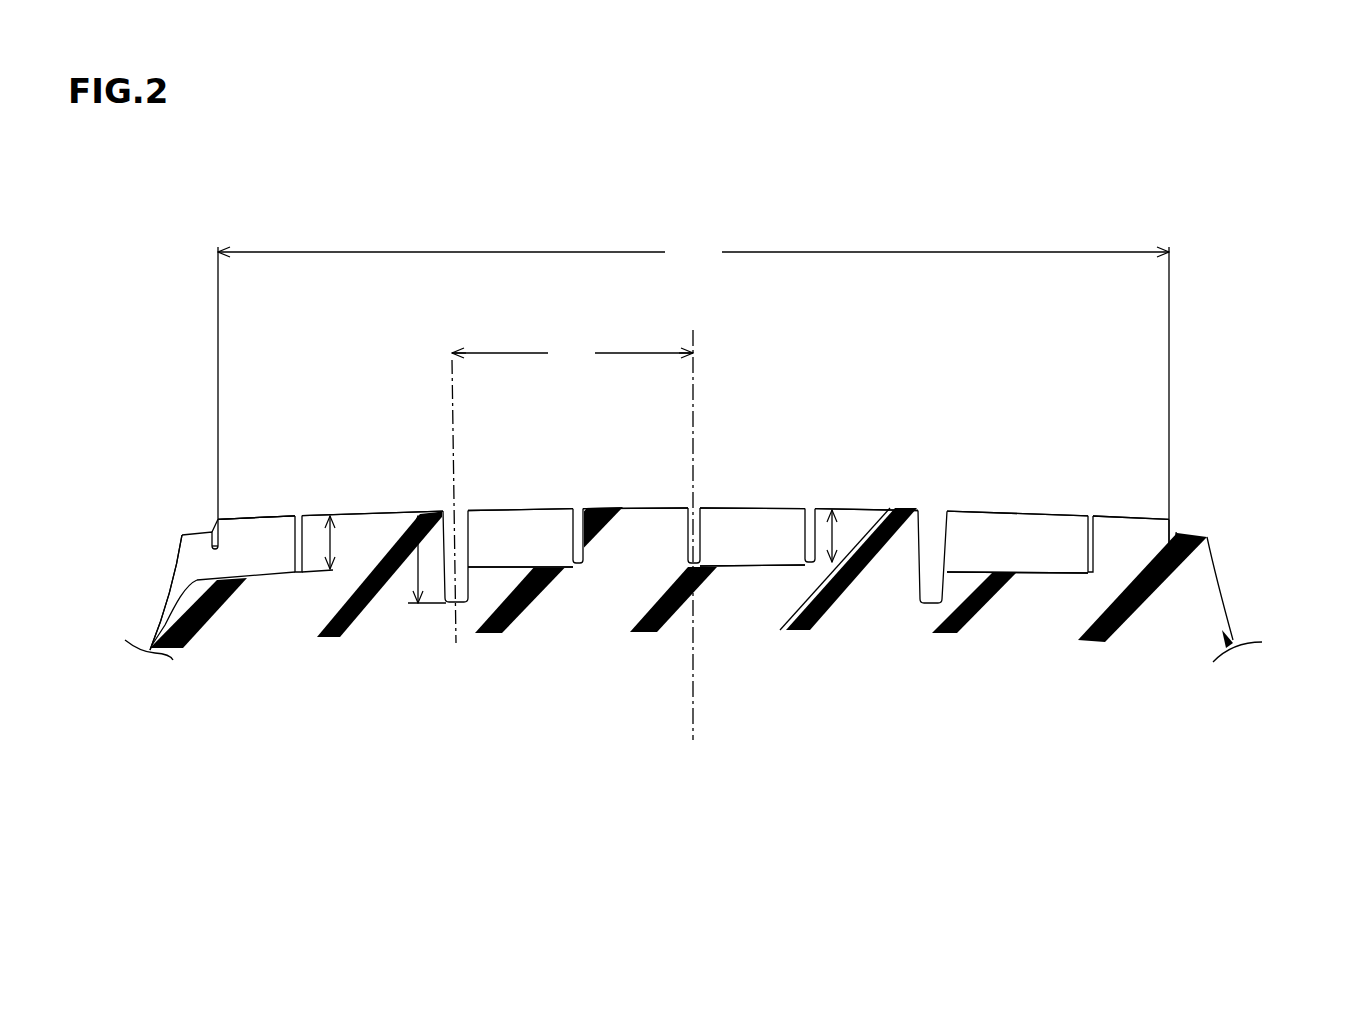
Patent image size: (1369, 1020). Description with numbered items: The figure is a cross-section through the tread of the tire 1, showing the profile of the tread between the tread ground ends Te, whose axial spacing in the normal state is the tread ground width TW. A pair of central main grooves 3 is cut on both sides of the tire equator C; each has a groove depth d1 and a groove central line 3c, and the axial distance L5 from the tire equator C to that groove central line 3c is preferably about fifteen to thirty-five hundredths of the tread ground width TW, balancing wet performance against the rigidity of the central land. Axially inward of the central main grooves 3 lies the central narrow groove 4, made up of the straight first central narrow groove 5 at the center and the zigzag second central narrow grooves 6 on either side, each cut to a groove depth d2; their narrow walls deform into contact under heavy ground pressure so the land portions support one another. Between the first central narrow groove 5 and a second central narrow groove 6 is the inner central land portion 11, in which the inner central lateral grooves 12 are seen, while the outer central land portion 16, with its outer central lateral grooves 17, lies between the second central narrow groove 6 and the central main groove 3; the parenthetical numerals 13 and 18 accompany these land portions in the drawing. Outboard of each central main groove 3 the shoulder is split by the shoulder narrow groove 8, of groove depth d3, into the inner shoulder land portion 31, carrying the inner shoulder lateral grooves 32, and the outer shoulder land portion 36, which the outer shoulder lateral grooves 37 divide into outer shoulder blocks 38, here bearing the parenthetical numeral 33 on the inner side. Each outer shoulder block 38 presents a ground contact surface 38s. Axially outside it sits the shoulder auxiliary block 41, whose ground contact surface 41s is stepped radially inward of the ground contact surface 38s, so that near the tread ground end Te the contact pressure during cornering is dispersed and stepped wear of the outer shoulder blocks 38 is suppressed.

The tire 1 is at (1275, 428).
The central main groove 3 is at (452, 523).
The groove central line 3c is at (452, 430).
The central narrow groove 4 is at (722, 478).
The first central narrow groove 5 is at (696, 523).
The second central narrow groove 6 is at (578, 523).
The shoulder narrow groove 8 is at (295, 520).
The inner central land portion 11 is at (707, 453).
The inner central lateral groove 12 is at (765, 558).
The center rib 13 is at (638, 505).
The outer central land portion 16 is at (710, 454).
The outer central lateral groove 17 is at (523, 558).
The middle rib 18 is at (495, 503).
The inner shoulder land portion 31 is at (695, 432).
The inner shoulder lateral groove 32 is at (992, 567).
The shoulder rib 33 is at (375, 510).
The outer shoulder land portion 36 is at (693, 428).
The outer shoulder lateral groove 37 is at (260, 550).
The outer shoulder block 38 is at (278, 510).
The ground contact surface 38s is at (240, 518).
The shoulder auxiliary block 41 is at (694, 566).
The ground contact surface 41s is at (210, 523).
The tread ground end Te is at (215, 520).
The tire equator C is at (693, 523).
The tread ground width TW is at (693, 379).
The axial distance L5 is at (572, 354).
The groove depth d1 is at (417, 570).
The groove depth d2 is at (833, 537).
The groove depth d3 is at (333, 540).